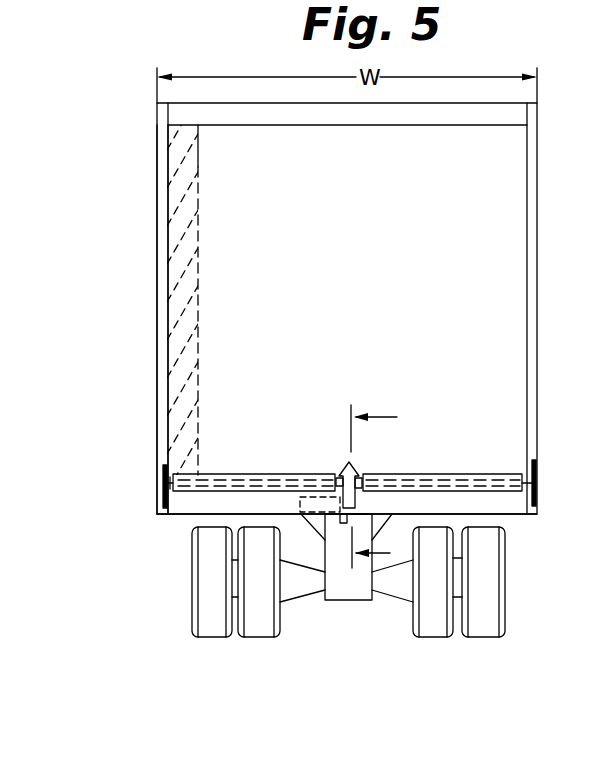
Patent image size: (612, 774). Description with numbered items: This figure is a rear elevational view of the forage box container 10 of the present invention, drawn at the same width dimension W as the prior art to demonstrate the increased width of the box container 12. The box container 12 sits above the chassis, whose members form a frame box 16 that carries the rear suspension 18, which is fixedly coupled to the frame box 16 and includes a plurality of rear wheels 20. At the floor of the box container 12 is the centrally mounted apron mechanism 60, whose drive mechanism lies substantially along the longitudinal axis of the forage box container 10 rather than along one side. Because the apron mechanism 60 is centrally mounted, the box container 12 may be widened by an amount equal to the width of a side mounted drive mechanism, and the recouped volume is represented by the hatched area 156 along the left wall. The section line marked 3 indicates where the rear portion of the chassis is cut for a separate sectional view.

The forage box container 10 is at (149, 145).
The box container 12 is at (158, 257).
The hatched area 156 is at (175, 187).
The frame box 16 is at (166, 514).
The apron mechanism 60 is at (334, 480).
The section line 3 is at (382, 486).
The rear suspension 18 is at (347, 601).
The rear wheels 20 is at (212, 570).